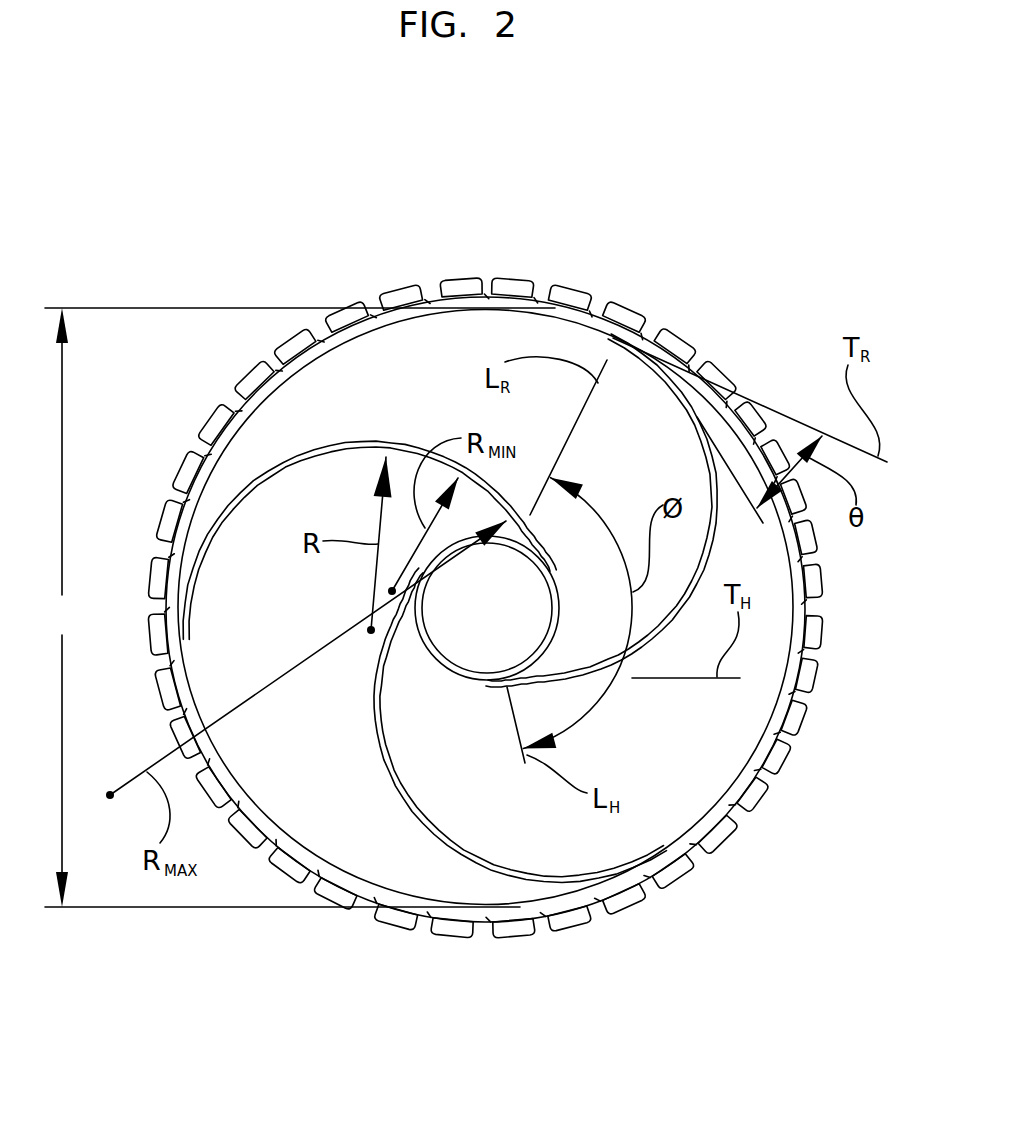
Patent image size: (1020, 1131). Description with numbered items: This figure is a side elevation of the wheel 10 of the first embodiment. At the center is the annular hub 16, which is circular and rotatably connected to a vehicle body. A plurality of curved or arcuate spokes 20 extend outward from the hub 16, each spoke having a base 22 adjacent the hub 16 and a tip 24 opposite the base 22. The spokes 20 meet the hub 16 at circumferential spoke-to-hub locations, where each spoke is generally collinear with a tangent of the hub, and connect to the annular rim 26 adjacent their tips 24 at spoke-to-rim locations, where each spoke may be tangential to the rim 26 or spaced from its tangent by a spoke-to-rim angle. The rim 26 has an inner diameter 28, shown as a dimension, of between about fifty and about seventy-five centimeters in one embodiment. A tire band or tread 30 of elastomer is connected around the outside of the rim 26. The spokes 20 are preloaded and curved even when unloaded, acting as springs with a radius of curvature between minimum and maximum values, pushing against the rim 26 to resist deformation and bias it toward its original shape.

The wheel 10 is at (330, 218).
The annular hub 16 is at (447, 680).
The spokes 20 is at (230, 518).
The base 22 is at (371, 640).
The tip 24 is at (637, 862).
The annular rim 26 is at (447, 300).
The inner diameter 28 is at (300, 607).
The tread 30 is at (813, 698).